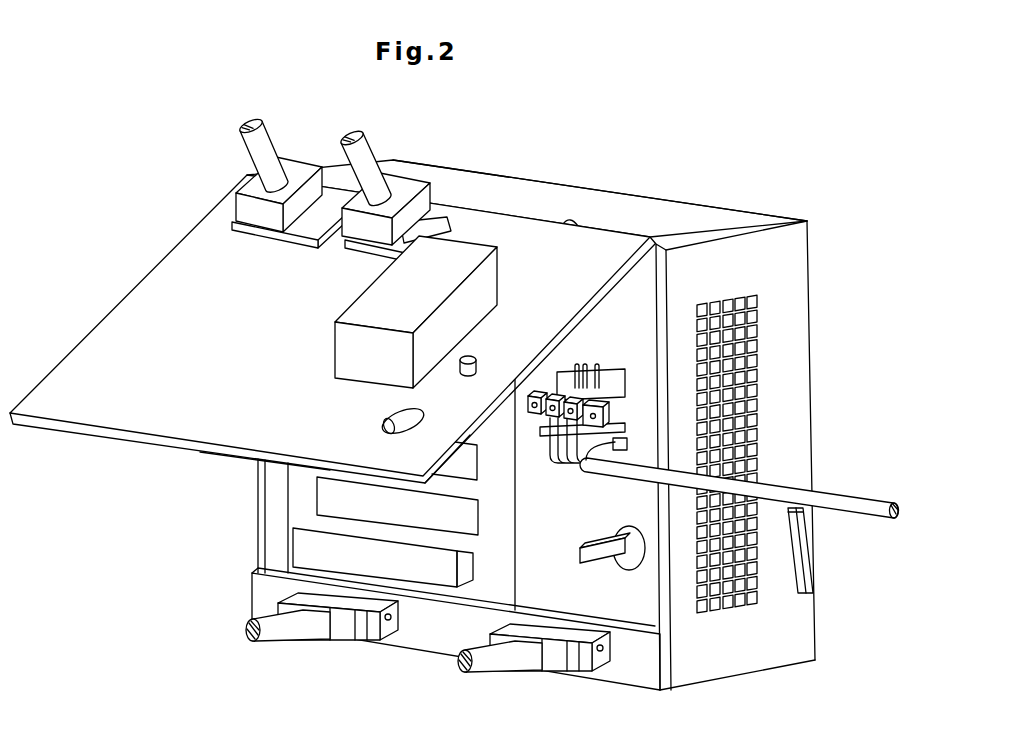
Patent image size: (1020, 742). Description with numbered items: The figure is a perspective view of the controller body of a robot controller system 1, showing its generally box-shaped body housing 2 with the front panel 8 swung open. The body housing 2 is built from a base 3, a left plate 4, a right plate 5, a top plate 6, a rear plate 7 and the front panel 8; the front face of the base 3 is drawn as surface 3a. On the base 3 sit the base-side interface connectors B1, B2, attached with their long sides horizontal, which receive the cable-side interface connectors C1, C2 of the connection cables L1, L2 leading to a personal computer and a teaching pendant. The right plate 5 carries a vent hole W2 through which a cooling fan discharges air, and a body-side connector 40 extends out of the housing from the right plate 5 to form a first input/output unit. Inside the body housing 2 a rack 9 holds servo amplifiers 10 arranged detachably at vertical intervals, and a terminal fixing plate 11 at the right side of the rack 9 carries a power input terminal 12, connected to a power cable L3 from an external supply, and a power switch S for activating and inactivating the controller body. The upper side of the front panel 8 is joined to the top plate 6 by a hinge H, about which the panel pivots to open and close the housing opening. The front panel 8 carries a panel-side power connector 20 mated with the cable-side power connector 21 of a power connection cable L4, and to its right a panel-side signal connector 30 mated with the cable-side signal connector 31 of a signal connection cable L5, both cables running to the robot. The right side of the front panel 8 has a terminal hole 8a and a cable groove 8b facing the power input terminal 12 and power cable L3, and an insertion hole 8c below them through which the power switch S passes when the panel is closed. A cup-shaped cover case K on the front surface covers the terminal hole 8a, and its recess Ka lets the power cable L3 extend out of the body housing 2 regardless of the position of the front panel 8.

The robot controller system 1 is at (776, 176).
The body housing 2 is at (678, 206).
The base 3 is at (251, 596).
The base front face 3a is at (382, 641).
The left plate 4 is at (258, 545).
The right plate 5 is at (808, 363).
The top plate 6 is at (536, 186).
The rear plate 7 is at (808, 263).
The front panel 8 is at (112, 318).
The terminal hole 8a is at (388, 378).
The cable groove 8b is at (448, 384).
The insertion hole 8c is at (385, 422).
The rack 9 is at (467, 560).
The servo amplifiers 10 is at (468, 513).
The terminal fixing plate 11 is at (655, 611).
The power input terminal 12 is at (615, 382).
The panel-side power connector 20 is at (285, 248).
The cable-side power connector 21 is at (250, 232).
The panel-side signal connector 30 is at (377, 253).
The cable-side signal connector 31 is at (418, 195).
The body-side connector 40 is at (810, 560).
The hinge H is at (570, 223).
The cover case K is at (348, 352).
The recess Ka is at (463, 362).
The power switch S is at (597, 543).
The vent hole W2 is at (757, 590).
The connection cable L1 is at (277, 636).
The connection cable L2 is at (463, 657).
The power cable L3 is at (843, 503).
The power connection cable L4 is at (257, 150).
The signal connection cable L5 is at (363, 152).
The base-side interface connector B1 is at (355, 600).
The base-side interface connector B2 is at (595, 637).
The cable-side interface connector C1 is at (345, 634).
The cable-side interface connector C2 is at (533, 667).